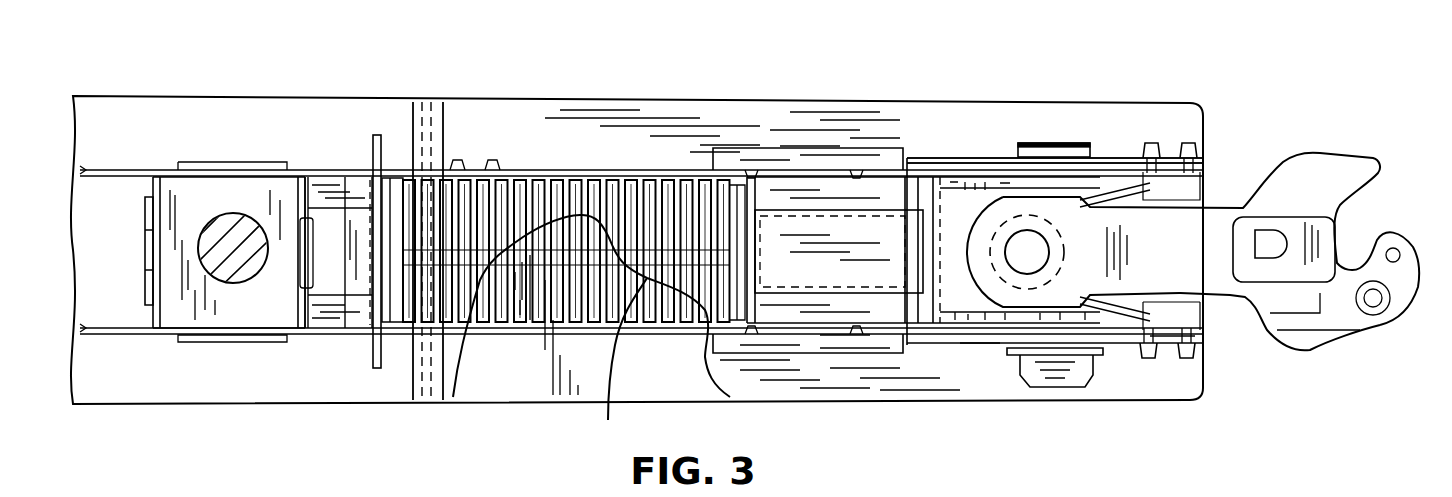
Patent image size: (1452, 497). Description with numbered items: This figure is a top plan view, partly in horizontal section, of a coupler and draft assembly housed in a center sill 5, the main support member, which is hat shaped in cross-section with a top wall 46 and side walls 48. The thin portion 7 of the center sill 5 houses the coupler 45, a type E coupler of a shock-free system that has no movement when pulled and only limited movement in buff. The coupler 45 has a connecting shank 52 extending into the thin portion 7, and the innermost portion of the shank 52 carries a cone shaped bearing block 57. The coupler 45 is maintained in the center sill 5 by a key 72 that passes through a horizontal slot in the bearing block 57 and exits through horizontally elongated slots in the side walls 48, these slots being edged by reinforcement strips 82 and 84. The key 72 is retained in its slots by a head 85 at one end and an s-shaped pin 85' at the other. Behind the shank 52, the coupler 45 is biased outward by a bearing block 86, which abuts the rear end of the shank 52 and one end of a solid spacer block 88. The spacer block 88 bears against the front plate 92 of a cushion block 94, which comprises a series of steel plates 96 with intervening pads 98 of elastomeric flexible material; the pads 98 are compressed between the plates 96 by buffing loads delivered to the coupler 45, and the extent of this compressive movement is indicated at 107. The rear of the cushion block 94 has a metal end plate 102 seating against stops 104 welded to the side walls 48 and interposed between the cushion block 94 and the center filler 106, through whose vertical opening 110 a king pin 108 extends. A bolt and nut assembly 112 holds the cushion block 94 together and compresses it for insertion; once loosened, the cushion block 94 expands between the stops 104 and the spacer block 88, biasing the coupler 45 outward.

The center sill 5 is at (1180, 118).
The thin portion 7 is at (918, 343).
The coupler 45 is at (1302, 332).
The top wall 46 is at (595, 309).
The side walls 48 is at (732, 168).
The connecting shank 52 is at (1220, 217).
The bearing block 57 is at (1010, 300).
The key 72 is at (1067, 152).
The reinforcement strip 82 is at (1005, 322).
The reinforcement strip 84 is at (1012, 173).
The head 85 is at (1054, 113).
The s-shaped pin 85' is at (1077, 393).
The bearing block 86 is at (967, 200).
The spacer block 88 is at (829, 270).
The front plate 92 is at (762, 250).
The cushion block 94 is at (608, 420).
The steel plates 96 is at (627, 185).
The pads 98 is at (535, 185).
The end plate 102 is at (390, 298).
The stops 104 is at (320, 190).
The center filler 106 is at (275, 303).
The extent of compressive movement 107 is at (918, 182).
The king pin 108 is at (213, 262).
The vertical opening 110 is at (223, 213).
The bolt and nut assembly 112 is at (458, 172).